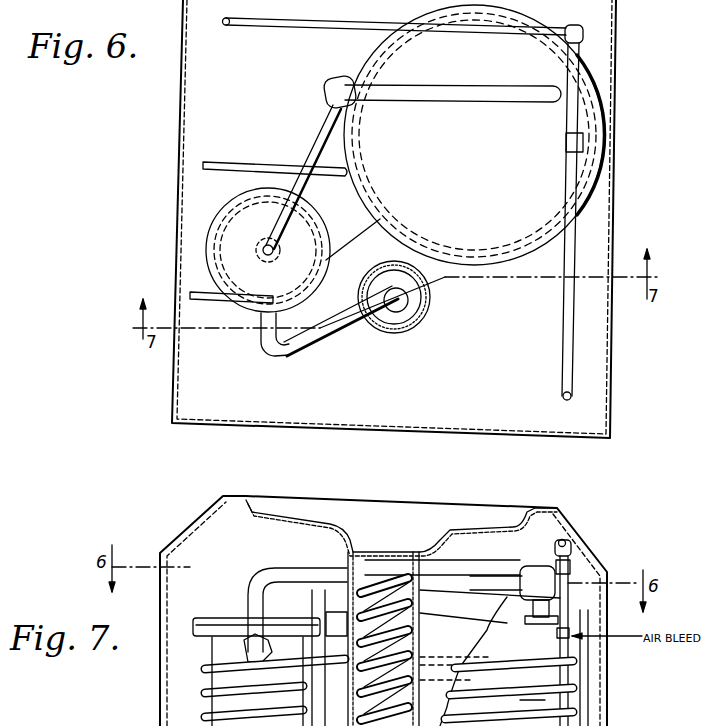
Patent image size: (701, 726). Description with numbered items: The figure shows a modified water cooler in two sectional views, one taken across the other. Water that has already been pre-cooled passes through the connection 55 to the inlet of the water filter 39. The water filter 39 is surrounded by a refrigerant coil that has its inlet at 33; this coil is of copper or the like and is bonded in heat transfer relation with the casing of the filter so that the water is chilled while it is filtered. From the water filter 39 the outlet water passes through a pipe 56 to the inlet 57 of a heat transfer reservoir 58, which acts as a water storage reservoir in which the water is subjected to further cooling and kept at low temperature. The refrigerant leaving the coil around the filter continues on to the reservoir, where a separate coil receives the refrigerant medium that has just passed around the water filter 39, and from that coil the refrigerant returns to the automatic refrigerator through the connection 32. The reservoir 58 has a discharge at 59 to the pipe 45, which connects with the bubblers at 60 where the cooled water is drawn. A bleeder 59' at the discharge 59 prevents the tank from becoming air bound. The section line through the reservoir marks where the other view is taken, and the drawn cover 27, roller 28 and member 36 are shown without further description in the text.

In FIG. 7, the cover 27 is at (401, 528).
In FIG. 6, the roller 28 is at (425, 324).
In FIG. 6, the connection 32 is at (203, 292).
In FIG. 6, the inlet 33 is at (236, 162).
In FIG. 6, the spring / bar 36 is at (383, 317).
In FIG. 7, the spring / bar 36 is at (414, 606).
In FIG. 6, the water filter 39 is at (267, 341).
In FIG. 7, the water filter 39 is at (245, 648).
In FIG. 6, the pipe 45 is at (565, 352).
In FIG. 7, the pipe 45 is at (568, 540).
In FIG. 7, the connection 55 is at (255, 638).
In FIG. 6, the pipe 56 is at (312, 135).
In FIG. 7, the inlet 57 is at (538, 565).
In FIG. 6, the heat transfer reservoir 58 is at (486, 131).
In FIG. 6, the discharge 59 is at (553, 163).
In FIG. 7, the discharge 59 is at (605, 556).
In FIG. 7, the bleeder 59' is at (608, 649).
In FIG. 6, the bubblers 60 is at (224, 26).